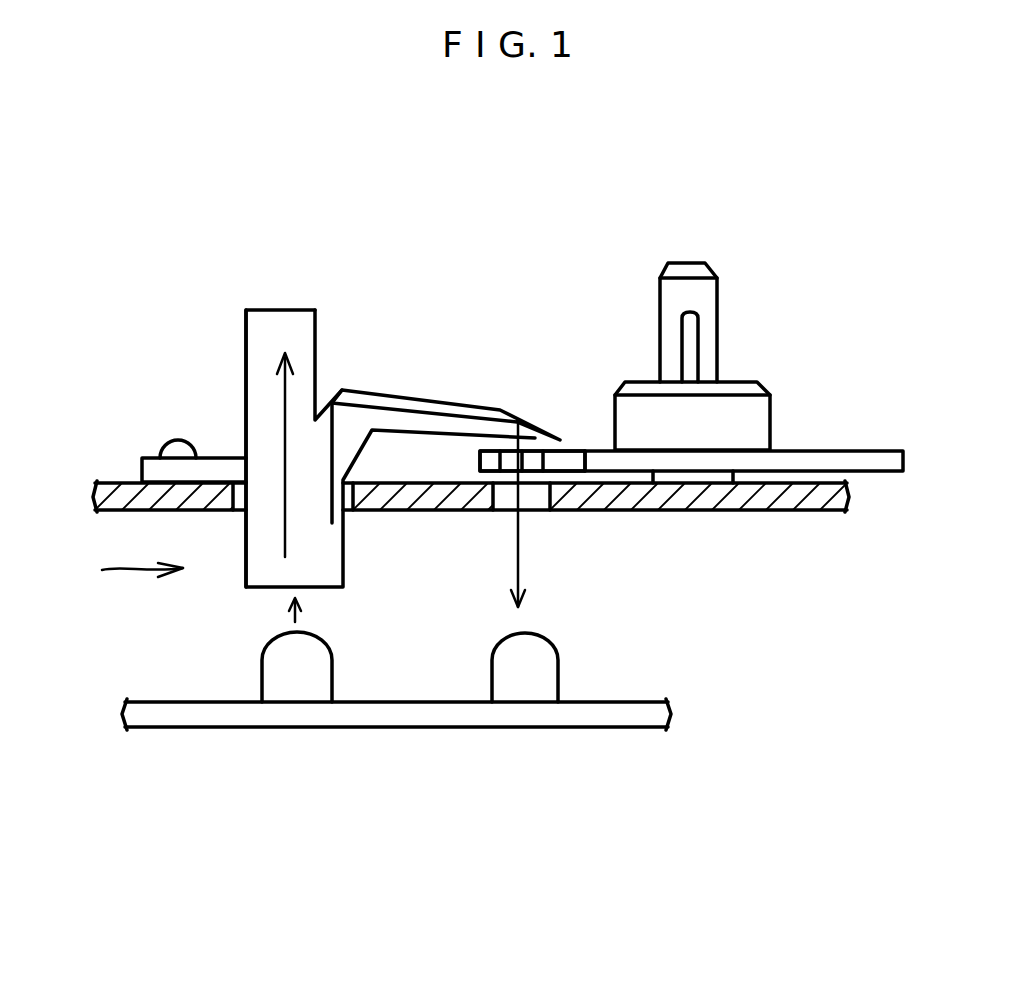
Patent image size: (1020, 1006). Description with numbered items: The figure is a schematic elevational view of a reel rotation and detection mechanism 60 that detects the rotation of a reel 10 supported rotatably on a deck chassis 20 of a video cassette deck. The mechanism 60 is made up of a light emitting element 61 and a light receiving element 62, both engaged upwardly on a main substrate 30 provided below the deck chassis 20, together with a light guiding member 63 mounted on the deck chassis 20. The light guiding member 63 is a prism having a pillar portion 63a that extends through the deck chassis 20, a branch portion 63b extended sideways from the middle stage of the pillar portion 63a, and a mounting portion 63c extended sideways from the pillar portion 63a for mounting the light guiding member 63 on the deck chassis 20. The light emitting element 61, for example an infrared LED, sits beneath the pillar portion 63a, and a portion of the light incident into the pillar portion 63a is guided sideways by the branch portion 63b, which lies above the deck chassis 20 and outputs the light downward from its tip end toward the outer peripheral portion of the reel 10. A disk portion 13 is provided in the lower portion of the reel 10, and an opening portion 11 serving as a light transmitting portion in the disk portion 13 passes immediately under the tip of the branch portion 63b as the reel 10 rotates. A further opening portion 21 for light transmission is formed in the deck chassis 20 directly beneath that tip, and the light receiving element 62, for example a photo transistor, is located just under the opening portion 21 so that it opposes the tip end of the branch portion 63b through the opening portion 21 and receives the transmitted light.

The reel 10 is at (770, 403).
The opening portion 11 is at (527, 455).
The disk portion 13 is at (876, 450).
The deck chassis 20 is at (763, 515).
The opening portion 21 is at (533, 505).
The main substrate 30 is at (633, 720).
The reel rotation and detection mechanism 60 is at (111, 574).
The light emitting element 61 is at (295, 688).
The light receiving element 62 is at (527, 687).
The light guiding member 63 is at (282, 293).
The pillar portion 63a is at (246, 363).
The branch portion 63b is at (418, 397).
The mounting portion 63c is at (152, 457).